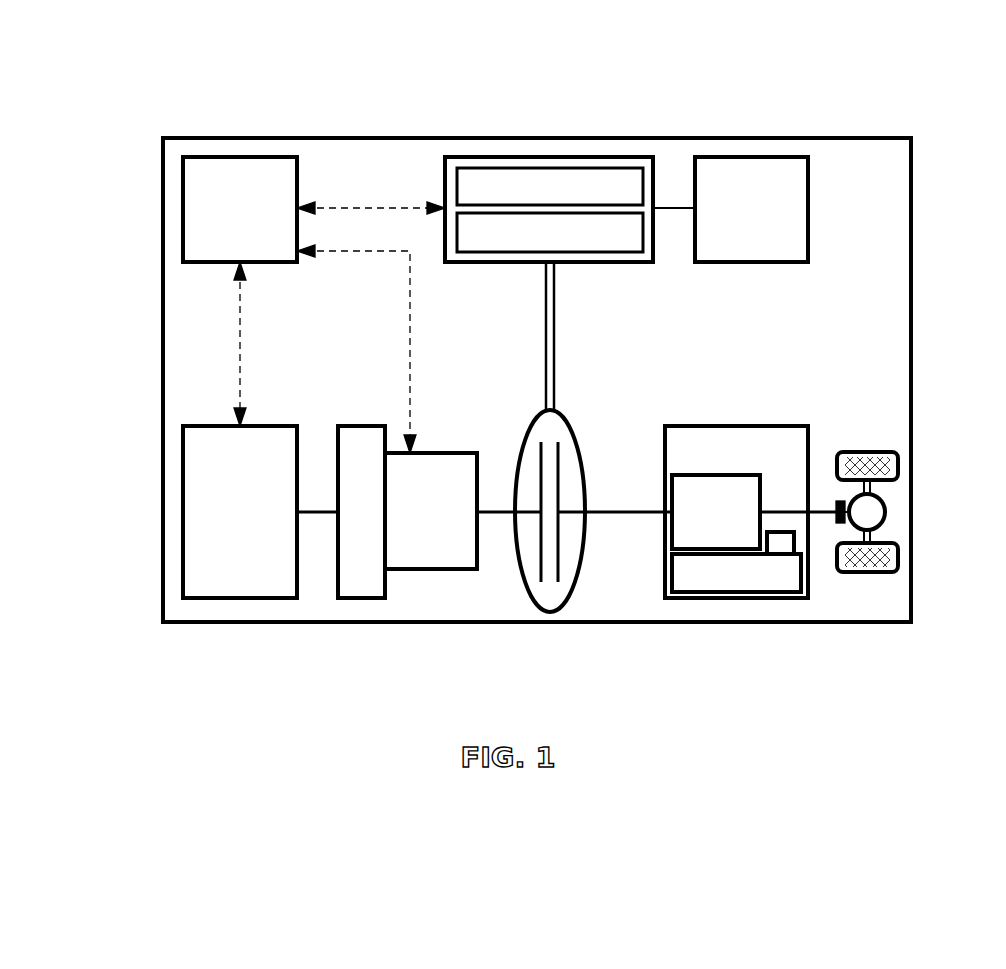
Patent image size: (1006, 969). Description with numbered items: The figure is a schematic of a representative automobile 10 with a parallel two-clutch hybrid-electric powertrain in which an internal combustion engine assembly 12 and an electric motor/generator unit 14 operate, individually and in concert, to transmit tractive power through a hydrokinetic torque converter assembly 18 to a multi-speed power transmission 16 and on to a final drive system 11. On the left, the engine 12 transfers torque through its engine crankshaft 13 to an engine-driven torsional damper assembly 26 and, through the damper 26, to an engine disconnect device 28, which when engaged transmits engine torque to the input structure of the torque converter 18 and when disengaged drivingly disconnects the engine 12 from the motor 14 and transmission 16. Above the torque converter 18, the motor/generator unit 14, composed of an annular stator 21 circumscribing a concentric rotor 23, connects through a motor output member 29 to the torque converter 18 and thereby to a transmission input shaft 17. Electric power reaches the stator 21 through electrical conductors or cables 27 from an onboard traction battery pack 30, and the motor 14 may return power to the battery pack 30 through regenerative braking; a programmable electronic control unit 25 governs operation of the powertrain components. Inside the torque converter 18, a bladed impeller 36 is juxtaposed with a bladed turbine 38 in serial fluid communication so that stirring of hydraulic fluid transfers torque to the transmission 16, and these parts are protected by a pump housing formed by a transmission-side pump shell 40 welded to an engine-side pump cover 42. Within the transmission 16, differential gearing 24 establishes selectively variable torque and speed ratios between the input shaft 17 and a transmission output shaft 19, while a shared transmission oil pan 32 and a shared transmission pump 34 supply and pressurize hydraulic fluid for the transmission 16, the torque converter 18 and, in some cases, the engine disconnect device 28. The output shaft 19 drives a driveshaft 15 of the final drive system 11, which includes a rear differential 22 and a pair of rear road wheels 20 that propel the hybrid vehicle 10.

The automobile 10 is at (155, 121).
The final drive system 11 is at (888, 336).
The internal combustion engine assembly 12 is at (195, 426).
The engine crankshaft 13 is at (316, 510).
The electric motor/generator unit 14 is at (462, 157).
The driveshaft 15 is at (826, 505).
The multi-speed power transmission 16 is at (675, 426).
The transmission input shaft 17 is at (617, 510).
The hydrokinetic torque converter assembly 18 is at (580, 565).
The transmission output shaft 19 is at (777, 508).
The road wheels 20 is at (862, 452).
The annular stator 21 is at (455, 175).
The rear differential 22 is at (887, 512).
The rotor 23 is at (455, 227).
The differential gearing 24 is at (714, 475).
The programmable electronic control unit 25 is at (193, 157).
The torsional damper assembly 26 is at (378, 426).
The electrical conductors or cables 27 is at (668, 207).
The engine disconnect device 28 is at (452, 453).
The motor output member 29 is at (543, 292).
The traction battery pack 30 is at (723, 157).
The transmission oil pan 32 is at (714, 572).
The transmission pump 34 is at (778, 540).
The bladed impeller 36 is at (527, 590).
The bladed turbine 38 is at (565, 590).
The transmission-side pump shell 40 is at (585, 540).
The engine-side pump cover 42 is at (517, 575).